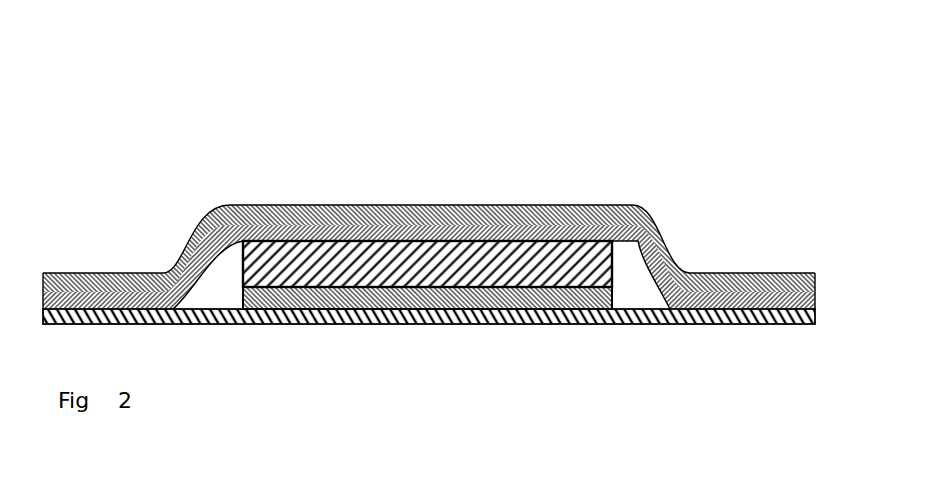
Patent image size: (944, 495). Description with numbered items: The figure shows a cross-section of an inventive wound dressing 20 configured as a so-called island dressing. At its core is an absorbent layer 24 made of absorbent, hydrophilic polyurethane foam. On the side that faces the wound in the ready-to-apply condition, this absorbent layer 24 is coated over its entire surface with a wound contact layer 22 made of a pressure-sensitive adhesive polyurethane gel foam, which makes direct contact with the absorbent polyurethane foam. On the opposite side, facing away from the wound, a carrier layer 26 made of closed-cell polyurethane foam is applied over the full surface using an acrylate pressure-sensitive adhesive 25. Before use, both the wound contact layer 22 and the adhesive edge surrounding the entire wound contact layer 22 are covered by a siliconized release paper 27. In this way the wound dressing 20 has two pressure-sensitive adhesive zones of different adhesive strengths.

The wound dressing 20 is at (250, 181).
The wound contact layer 22 is at (613, 298).
The absorbent layer 24 is at (613, 262).
The acrylate pressure-sensitive adhesive 25 is at (420, 230).
The carrier layer 26 is at (343, 207).
The siliconized release paper 27 is at (722, 309).